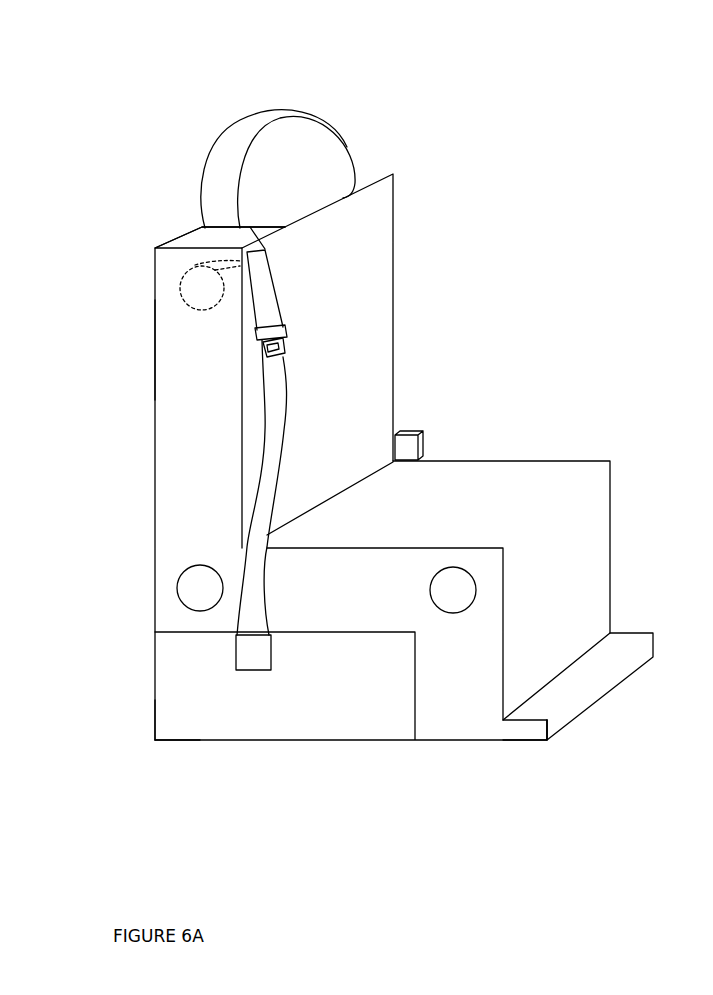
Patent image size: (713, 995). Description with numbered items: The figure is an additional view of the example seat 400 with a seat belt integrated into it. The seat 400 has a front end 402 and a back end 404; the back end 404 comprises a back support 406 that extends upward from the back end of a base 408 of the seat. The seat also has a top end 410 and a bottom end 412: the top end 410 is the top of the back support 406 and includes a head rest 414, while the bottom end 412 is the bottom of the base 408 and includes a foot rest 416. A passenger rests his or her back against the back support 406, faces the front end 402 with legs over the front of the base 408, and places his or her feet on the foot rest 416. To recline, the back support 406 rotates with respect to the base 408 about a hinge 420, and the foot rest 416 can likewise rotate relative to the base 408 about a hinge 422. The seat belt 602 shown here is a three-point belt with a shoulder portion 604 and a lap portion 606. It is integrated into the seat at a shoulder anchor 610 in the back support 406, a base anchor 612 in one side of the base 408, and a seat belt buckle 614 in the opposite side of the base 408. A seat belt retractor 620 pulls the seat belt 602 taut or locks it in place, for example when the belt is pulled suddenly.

The seat 400 is at (364, 482).
The front end 402 is at (644, 580).
The back end 404 is at (118, 330).
The back support 406 is at (167, 425).
The base 408 is at (185, 742).
The top end 410 is at (330, 144).
The bottom end 412 is at (352, 786).
The head rest 414 is at (349, 158).
The foot rest 416 is at (537, 735).
The hinge 420 is at (177, 588).
The hinge 422 is at (443, 613).
The seat belt 602 is at (312, 296).
The shoulder portion 604 is at (280, 265).
The lap portion 606 is at (285, 365).
The shoulder anchor 610 is at (157, 238).
The base anchor 612 is at (236, 664).
The seat belt buckle 614 is at (423, 440).
The seat belt retractor 620 is at (182, 288).